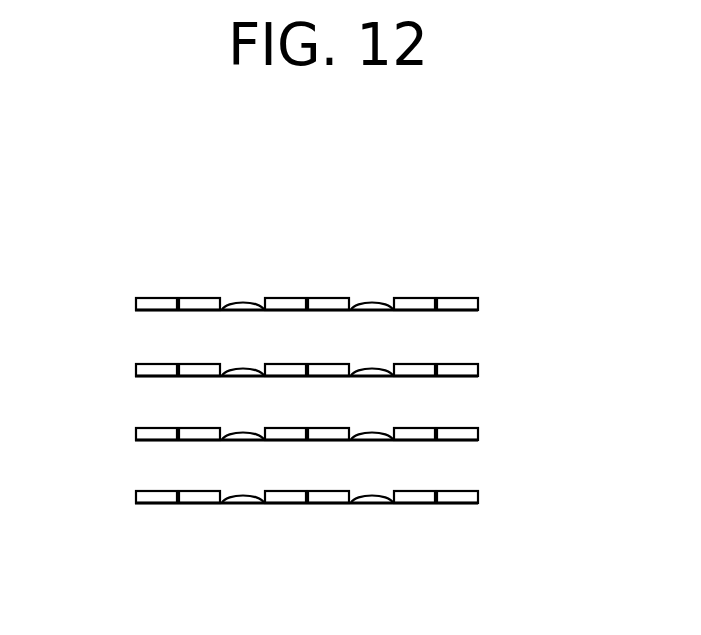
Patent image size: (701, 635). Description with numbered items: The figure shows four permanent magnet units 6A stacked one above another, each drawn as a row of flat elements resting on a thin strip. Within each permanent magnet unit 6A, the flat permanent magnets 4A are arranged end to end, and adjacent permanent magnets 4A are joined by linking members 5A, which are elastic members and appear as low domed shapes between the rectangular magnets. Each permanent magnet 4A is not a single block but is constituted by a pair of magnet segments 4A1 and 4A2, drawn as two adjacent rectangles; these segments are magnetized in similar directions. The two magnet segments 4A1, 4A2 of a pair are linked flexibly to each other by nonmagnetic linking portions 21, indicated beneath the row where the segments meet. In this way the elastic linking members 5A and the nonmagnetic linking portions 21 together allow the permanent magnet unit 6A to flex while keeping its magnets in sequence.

The permanent magnet 4A is at (193, 363).
The magnet segment 4A1 is at (160, 298).
The magnet segment 4A2 is at (205, 298).
The linking member 5A is at (250, 302).
The permanent magnet unit 6A is at (135, 305).
The nonmagnetic linking portion 21 is at (310, 313).